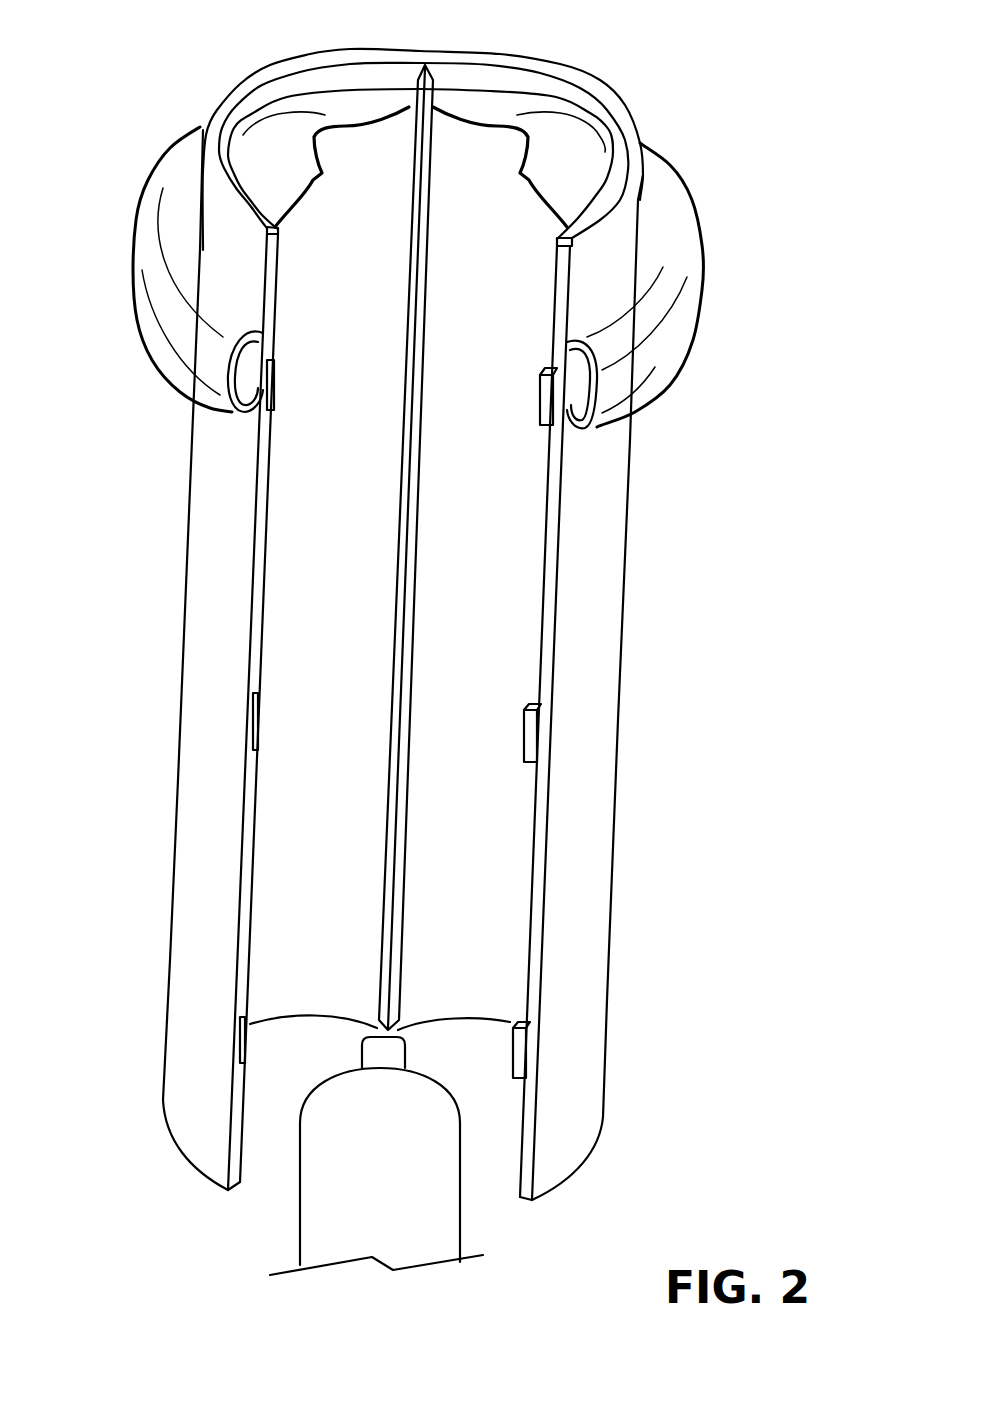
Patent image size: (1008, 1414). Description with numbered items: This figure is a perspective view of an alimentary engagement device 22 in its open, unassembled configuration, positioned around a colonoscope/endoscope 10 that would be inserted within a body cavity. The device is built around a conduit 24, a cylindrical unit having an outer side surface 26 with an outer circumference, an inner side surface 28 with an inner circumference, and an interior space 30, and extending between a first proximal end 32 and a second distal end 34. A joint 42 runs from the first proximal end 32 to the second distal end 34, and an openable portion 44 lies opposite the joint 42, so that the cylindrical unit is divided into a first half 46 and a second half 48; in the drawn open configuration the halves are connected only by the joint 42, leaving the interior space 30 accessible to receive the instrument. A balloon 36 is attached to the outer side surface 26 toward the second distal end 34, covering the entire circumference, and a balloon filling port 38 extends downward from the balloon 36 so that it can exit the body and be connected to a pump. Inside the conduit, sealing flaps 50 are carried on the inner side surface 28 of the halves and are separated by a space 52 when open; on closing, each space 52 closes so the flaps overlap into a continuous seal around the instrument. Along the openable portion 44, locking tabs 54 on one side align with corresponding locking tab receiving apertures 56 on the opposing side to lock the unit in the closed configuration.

The colonoscope/endoscope 10 is at (456, 1228).
The alimentary engagement device 22 is at (722, 799).
The conduit 24 is at (632, 434).
The outer side surface 26 is at (607, 533).
The inner side surface 28 is at (323, 597).
The interior space 30 is at (447, 655).
The first proximal end 32 is at (597, 1152).
The second distal end 34 is at (623, 132).
The balloon 36 is at (690, 293).
The balloon filling port 38 is at (378, 1057).
The joint 42 is at (403, 517).
The openable portion 44 is at (505, 1125).
The first half 46 is at (505, 58).
The second half 48 is at (283, 68).
The sealing flaps 50 is at (573, 188).
The space 52 is at (580, 127).
The locking tab 54 is at (537, 735).
The locking tab receiving aperture 56 is at (257, 720).